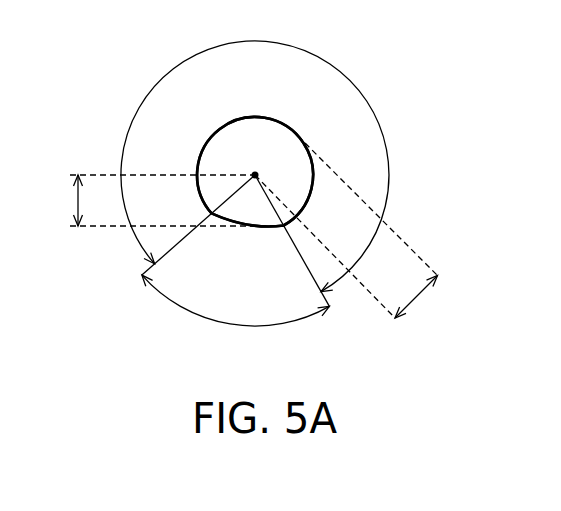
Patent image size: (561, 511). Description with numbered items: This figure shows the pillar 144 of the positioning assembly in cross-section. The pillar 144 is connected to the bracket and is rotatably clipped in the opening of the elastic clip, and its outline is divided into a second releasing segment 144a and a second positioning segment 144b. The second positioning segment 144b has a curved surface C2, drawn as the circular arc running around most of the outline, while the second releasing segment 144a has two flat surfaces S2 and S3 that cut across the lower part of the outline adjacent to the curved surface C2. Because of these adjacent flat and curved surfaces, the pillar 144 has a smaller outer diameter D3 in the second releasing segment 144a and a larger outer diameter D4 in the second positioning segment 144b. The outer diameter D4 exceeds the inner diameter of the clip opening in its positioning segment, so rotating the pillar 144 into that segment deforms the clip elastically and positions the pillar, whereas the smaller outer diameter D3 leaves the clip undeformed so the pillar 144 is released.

The pillar 144 is at (282, 145).
The second releasing segment 144a is at (236, 318).
The second positioning segment 144b is at (255, 147).
The curved surface C2 is at (222, 123).
The flat surface S2 is at (233, 222).
The flat surface S3 is at (268, 226).
The outer diameter D3 is at (161, 200).
The outer diameter D4 is at (351, 233).